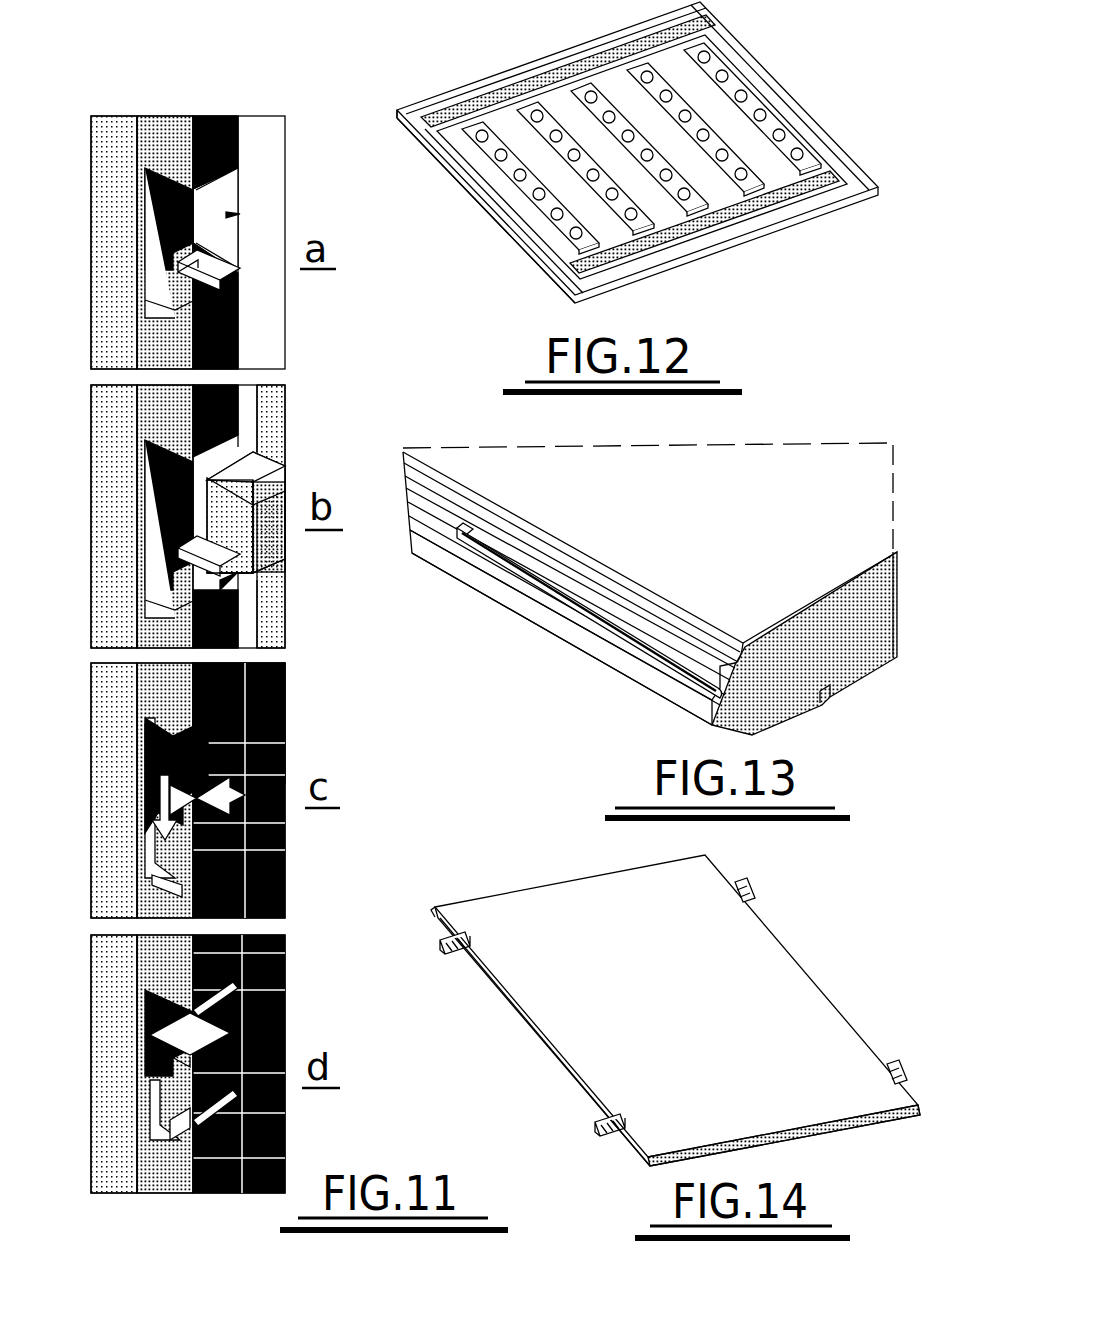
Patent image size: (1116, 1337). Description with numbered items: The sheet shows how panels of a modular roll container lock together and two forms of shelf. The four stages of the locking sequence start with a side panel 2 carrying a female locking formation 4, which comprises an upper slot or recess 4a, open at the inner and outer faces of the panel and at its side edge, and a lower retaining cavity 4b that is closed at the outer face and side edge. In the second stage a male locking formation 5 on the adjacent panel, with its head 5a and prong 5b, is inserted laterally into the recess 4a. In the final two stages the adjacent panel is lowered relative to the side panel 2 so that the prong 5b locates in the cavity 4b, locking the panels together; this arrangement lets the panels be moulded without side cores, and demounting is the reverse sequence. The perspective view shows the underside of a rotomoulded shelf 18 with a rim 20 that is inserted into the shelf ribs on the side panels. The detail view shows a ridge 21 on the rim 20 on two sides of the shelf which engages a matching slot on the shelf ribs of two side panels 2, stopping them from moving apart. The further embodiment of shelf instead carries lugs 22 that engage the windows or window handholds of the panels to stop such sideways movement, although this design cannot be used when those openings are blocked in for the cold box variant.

In FIG. 11, the side panel 2 is at (108, 197).
In FIG. 11, the female locking formation 4 is at (240, 215).
In FIG. 11, the upper slot 4a is at (217, 193).
In FIG. 11, the lower retaining cavity 4b is at (150, 302).
In FIG. 11, the male locking formation 5 is at (292, 482).
In FIG. 11, the head 5a is at (283, 537).
In FIG. 11, the prong 5b is at (237, 586).
In FIG. 12, the shelf 18 is at (508, 232).
In FIG. 13, the shelf 18 is at (836, 500).
In FIG. 12, the rim 20 is at (396, 110).
In FIG. 13, the rim 20 is at (621, 665).
In FIG. 13, the ridge 21 is at (698, 655).
In FIG. 14, the lugs 22 is at (453, 957).